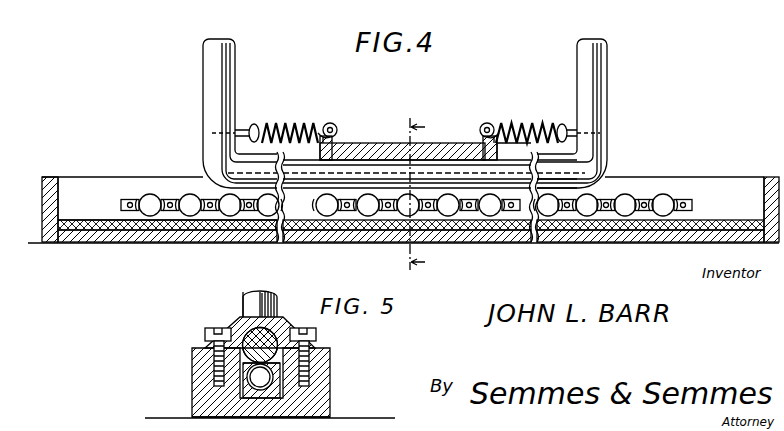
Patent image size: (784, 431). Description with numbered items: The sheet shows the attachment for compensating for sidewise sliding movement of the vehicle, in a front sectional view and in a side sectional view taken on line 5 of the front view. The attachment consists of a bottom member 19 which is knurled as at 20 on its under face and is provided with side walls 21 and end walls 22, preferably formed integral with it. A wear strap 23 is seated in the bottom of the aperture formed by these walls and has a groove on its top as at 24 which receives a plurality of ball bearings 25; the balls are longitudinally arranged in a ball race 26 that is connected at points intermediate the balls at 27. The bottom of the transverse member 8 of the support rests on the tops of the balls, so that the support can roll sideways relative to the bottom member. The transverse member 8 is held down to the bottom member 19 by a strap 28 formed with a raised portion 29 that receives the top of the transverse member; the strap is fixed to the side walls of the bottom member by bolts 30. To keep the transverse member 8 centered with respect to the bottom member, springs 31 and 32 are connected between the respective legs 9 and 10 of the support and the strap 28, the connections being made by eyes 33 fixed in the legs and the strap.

In FIG. 4, the section line 5 is at (425, 194).
In FIG. 4, the transverse member 8 is at (457, 168).
In FIG. 4, the leg 9 is at (233, 66).
In FIG. 5, the leg 9 is at (261, 292).
In FIG. 4, the leg 10 is at (605, 71).
In FIG. 4, the bottom member 19 is at (118, 242).
In FIG. 4, the knurling 20 is at (192, 243).
In FIG. 5, the side walls 21 is at (192, 374).
In FIG. 4, the end walls 22 is at (50, 176).
In FIG. 4, the wear strap 23 is at (250, 224).
In FIG. 5, the wear strap 23 is at (283, 396).
In FIG. 5, the groove 24 is at (240, 398).
In FIG. 4, the ball bearings 25 is at (663, 195).
In FIG. 5, the ball bearings 25 is at (278, 366).
In FIG. 4, the ball race 26 is at (580, 216).
In FIG. 4, the connections of ball race 27 is at (510, 216).
In FIG. 4, the strap 28 is at (367, 143).
In FIG. 5, the strap 28 is at (286, 322).
In FIG. 5, the raised portion 29 is at (246, 330).
In FIG. 5, the bolts 30 is at (210, 330).
In FIG. 4, the spring 31 is at (297, 126).
In FIG. 4, the spring 32 is at (522, 124).
In FIG. 4, the eyes 33 is at (331, 123).